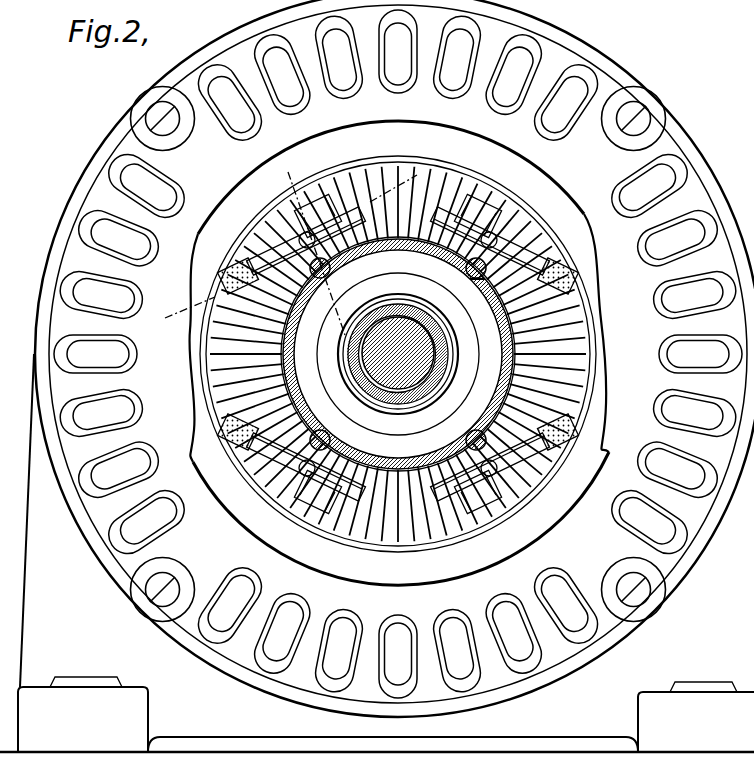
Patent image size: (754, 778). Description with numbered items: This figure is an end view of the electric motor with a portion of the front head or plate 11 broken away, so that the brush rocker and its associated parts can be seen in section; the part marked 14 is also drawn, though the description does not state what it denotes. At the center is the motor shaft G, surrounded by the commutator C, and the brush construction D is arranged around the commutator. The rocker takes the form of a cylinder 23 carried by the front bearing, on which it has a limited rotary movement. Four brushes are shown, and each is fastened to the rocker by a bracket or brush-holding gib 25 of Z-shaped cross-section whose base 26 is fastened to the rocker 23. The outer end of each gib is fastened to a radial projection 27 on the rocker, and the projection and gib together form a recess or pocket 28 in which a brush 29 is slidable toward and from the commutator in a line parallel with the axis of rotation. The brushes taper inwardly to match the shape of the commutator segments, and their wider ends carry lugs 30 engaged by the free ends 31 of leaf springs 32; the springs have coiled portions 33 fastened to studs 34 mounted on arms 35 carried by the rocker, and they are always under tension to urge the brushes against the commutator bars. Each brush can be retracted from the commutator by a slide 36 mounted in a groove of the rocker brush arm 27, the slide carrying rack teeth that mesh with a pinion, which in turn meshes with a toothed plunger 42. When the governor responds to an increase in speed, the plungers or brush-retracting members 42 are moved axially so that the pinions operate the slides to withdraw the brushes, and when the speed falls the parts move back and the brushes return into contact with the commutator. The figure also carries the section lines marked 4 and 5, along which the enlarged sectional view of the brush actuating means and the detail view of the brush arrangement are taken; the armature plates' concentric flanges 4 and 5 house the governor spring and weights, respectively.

The front head or plate 11 is at (398, 354).
The armature core 14 is at (440, 174).
The rocker cylinder 23 is at (301, 382).
The brush-holding gib 25 is at (297, 205).
The gib base 26 is at (410, 243).
The radial projection 27 is at (300, 223).
The recess or pocket 28 is at (330, 200).
The brush 29 is at (298, 207).
The brush lug 30 is at (465, 270).
The free end of leaf spring 31 is at (435, 250).
The leaf spring 32 is at (510, 253).
The coiled portion of spring 33 is at (574, 429).
The stud 34 is at (550, 479).
The arm 35 is at (535, 303).
The slide 36 is at (343, 253).
The toothed plunger 42 is at (474, 283).
The commutator C is at (387, 514).
The brushes D is at (484, 203).
The motor shaft G is at (417, 353).
The chambered hub 4 is at (286, 173).
The cylindrical concentric flange 5 is at (163, 262).